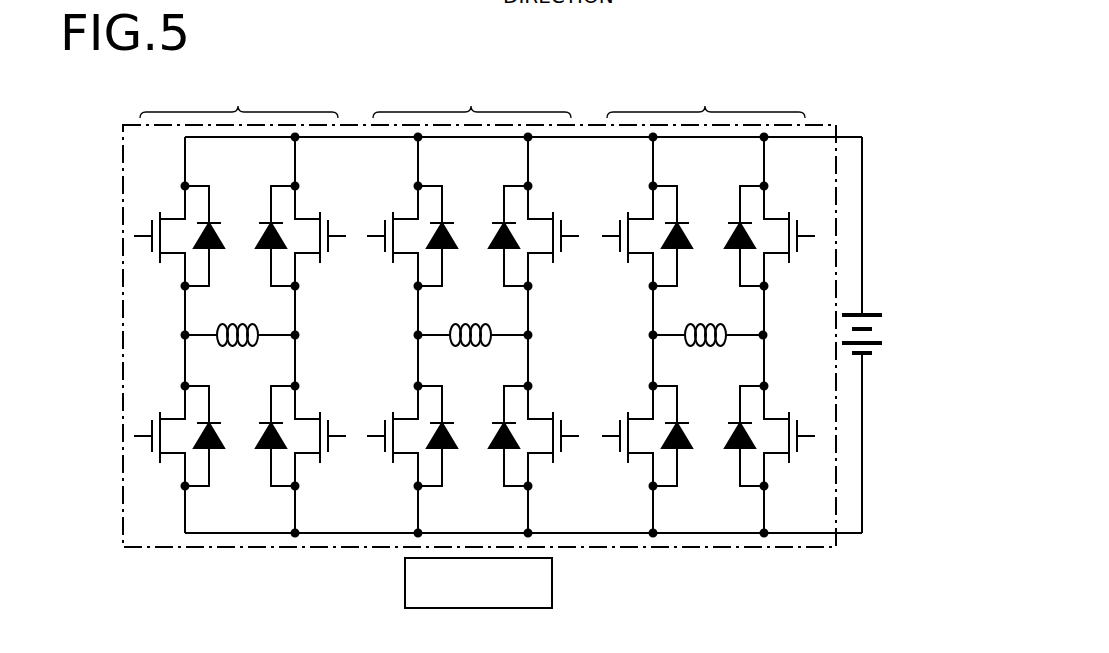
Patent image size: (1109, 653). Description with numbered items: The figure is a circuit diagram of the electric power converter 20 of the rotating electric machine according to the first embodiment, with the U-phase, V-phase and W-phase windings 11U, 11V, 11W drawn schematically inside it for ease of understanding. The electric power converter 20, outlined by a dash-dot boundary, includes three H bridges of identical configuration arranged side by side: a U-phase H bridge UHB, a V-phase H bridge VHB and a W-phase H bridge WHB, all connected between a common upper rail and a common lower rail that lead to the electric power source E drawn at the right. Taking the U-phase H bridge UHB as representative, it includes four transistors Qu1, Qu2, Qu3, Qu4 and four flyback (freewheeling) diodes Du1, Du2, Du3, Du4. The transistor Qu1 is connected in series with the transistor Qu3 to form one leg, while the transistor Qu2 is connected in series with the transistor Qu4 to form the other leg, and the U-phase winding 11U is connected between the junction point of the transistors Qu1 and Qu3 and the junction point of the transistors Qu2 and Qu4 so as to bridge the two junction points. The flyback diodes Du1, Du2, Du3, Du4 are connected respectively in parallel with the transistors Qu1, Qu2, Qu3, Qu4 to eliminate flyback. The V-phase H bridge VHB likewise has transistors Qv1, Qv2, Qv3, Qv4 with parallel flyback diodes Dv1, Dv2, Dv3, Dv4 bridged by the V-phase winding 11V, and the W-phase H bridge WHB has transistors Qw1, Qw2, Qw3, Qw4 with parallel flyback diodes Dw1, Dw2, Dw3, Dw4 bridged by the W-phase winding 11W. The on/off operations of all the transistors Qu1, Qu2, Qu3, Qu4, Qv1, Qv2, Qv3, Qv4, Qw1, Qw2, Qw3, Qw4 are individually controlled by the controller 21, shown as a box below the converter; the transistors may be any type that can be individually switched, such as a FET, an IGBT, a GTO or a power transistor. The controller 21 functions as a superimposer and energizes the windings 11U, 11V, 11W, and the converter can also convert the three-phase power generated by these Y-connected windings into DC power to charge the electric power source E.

The electric power converter 20 is at (828, 122).
The controller 21 is at (552, 585).
The electric power source E is at (865, 335).
The U-phase H bridge UHB is at (239, 303).
The V-phase H bridge VHB is at (472, 303).
The W-phase H bridge WHB is at (706, 303).
The U-phase winding 11U is at (240, 321).
The V-phase winding 11V is at (473, 321).
The W-phase winding 11W is at (708, 321).
The transistor Qu1 is at (158, 236).
The transistor Qu2 is at (322, 236).
The transistor Qu3 is at (158, 436).
The transistor Qu4 is at (322, 436).
The transistor Qv1 is at (391, 236).
The transistor Qv2 is at (554, 236).
The transistor Qv3 is at (391, 436).
The transistor Qv4 is at (554, 436).
The transistor Qw1 is at (626, 236).
The transistor Qw2 is at (793, 236).
The transistor Qw3 is at (626, 436).
The transistor Qw4 is at (793, 436).
The flyback diode Du1 is at (214, 221).
The flyback diode Du2 is at (272, 221).
The flyback diode Du3 is at (214, 452).
The flyback diode Du4 is at (272, 452).
The flyback diode Dv1 is at (446, 221).
The flyback diode Dv2 is at (505, 221).
The flyback diode Dv3 is at (446, 452).
The flyback diode Dv4 is at (505, 452).
The flyback diode Dw1 is at (684, 221).
The flyback diode Dw2 is at (743, 221).
The flyback diode Dw3 is at (684, 452).
The flyback diode Dw4 is at (743, 452).